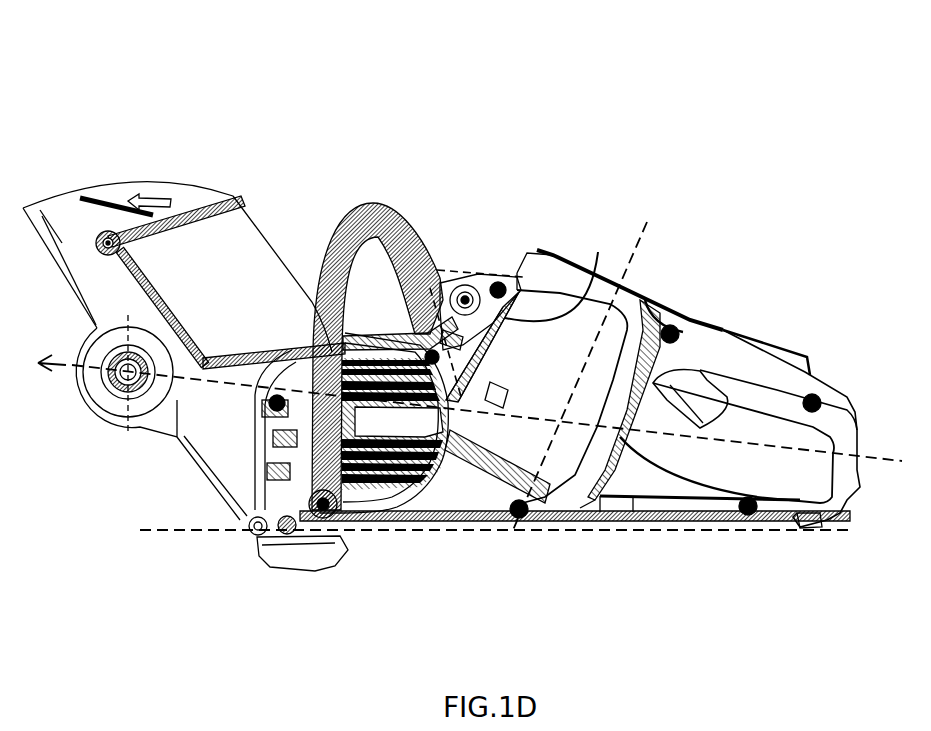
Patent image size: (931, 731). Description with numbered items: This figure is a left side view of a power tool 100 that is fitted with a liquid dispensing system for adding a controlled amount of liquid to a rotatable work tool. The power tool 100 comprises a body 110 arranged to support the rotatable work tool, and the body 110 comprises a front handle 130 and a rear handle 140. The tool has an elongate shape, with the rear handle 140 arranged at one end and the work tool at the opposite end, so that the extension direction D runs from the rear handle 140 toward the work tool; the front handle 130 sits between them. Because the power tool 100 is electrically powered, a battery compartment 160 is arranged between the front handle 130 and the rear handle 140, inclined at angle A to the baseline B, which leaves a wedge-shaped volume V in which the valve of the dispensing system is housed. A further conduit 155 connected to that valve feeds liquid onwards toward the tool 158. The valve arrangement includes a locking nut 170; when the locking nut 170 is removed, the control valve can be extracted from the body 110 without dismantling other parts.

The power tool 100 is at (166, 82).
The body 110 is at (455, 495).
The front handle 130 is at (355, 217).
The rear handle 140 is at (711, 353).
The further conduit 155 is at (367, 341).
The tool 158 is at (112, 243).
The battery compartment 160 is at (562, 380).
The locking nut 170 is at (461, 290).